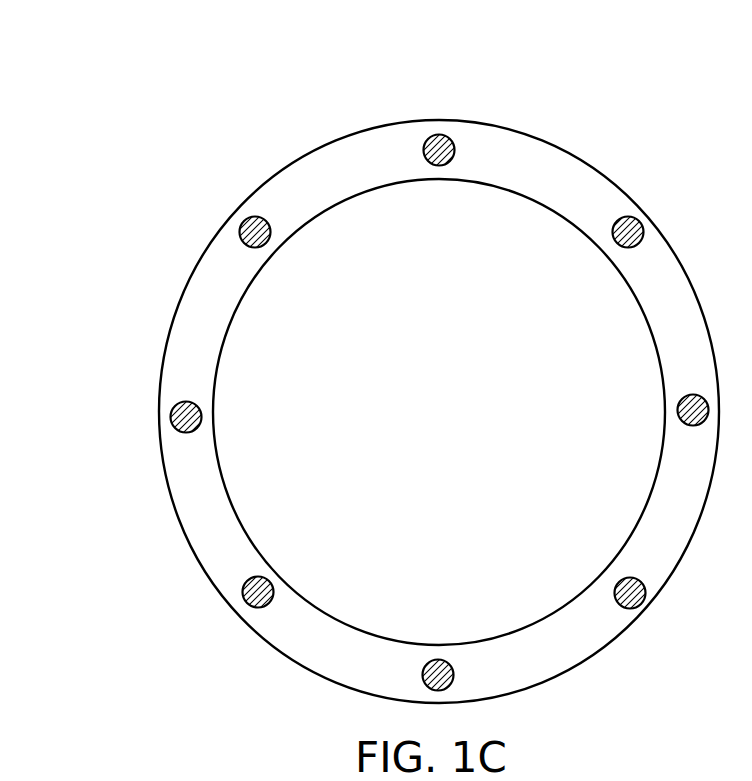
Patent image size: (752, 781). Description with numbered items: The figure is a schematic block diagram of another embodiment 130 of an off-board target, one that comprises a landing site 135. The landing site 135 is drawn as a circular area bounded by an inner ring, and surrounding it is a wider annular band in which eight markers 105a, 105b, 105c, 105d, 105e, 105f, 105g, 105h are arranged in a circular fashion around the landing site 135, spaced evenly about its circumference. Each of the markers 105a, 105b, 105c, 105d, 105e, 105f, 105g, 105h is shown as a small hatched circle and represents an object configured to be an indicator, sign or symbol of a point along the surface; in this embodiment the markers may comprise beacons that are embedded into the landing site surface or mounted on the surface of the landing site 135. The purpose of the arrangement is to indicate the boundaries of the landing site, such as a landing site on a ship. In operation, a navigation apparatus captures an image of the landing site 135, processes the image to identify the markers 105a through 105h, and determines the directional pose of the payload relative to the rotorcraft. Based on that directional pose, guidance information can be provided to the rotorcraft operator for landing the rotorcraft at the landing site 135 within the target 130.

The off-board target embodiment 130 is at (66, 78).
The landing site 135 is at (459, 423).
The marker 105a is at (171, 420).
The marker 105b is at (240, 235).
The marker 105c is at (424, 152).
The marker 105d is at (613, 232).
The marker 105e is at (678, 410).
The marker 105f is at (615, 592).
The marker 105g is at (423, 673).
The marker 105h is at (243, 590).